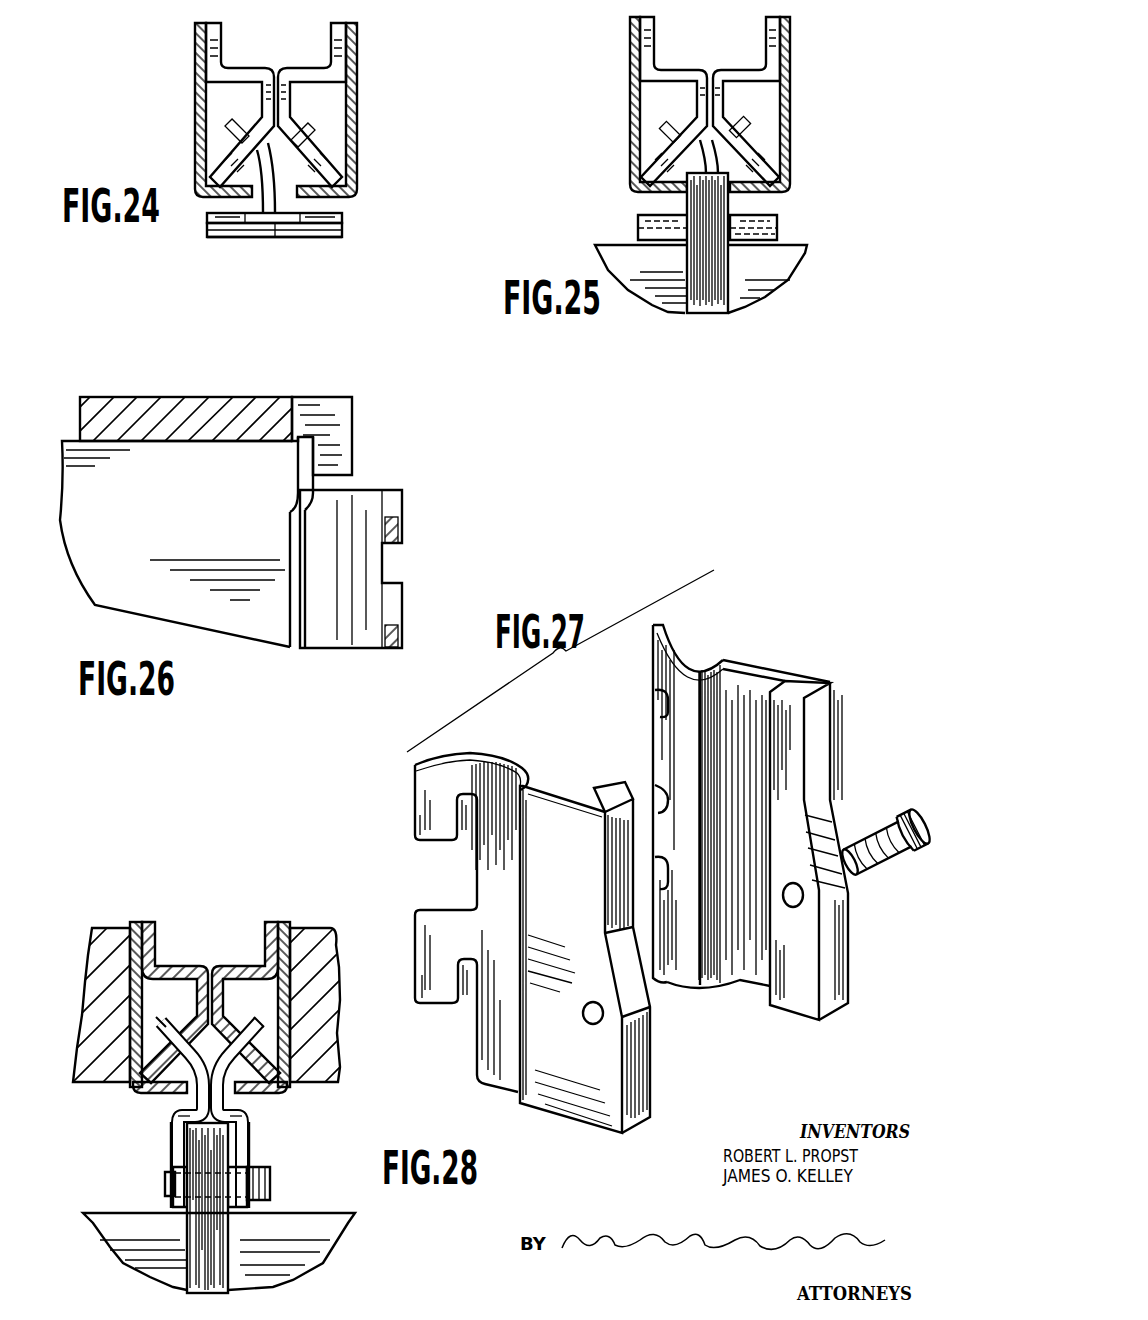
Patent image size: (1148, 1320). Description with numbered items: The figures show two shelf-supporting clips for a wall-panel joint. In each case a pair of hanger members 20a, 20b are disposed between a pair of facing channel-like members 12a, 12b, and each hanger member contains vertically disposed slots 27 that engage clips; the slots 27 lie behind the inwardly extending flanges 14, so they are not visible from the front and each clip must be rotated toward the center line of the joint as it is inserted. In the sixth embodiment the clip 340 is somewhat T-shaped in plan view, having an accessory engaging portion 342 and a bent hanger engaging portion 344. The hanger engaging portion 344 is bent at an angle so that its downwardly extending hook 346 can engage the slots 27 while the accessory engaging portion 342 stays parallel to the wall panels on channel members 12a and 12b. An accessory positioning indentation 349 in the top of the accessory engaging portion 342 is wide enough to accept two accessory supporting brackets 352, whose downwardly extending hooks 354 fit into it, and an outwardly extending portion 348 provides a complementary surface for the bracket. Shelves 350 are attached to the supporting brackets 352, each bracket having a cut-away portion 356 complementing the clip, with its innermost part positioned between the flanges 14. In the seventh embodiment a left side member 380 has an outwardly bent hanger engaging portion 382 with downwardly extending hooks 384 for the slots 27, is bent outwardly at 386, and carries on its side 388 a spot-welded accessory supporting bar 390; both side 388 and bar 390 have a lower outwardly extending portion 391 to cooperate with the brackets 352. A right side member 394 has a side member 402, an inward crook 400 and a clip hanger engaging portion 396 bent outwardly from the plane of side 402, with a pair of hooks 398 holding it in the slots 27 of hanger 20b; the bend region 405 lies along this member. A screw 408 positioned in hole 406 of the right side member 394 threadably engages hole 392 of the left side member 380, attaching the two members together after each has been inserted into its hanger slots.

In FIG. 24, the channel-like member 12a is at (200, 58).
In FIG. 28, the channel-like member 12a is at (131, 988).
In FIG. 24, the channel-like member 12b is at (352, 55).
In FIG. 25, the channel-like member 12b is at (633, 78).
In FIG. 28, the channel-like member 12b is at (292, 1007).
In FIG. 25, the inwardly extending flange 14 is at (652, 197).
In FIG. 28, the inwardly extending flange 14 is at (160, 1095).
In FIG. 24, the hanger member 20a is at (262, 97).
In FIG. 25, the hanger member 20a is at (700, 107).
In FIG. 28, the hanger member 20a is at (163, 955).
In FIG. 24, the hanger member 20b is at (282, 110).
In FIG. 25, the hanger member 20b is at (722, 118).
In FIG. 28, the hanger member 20b is at (257, 958).
In FIG. 24, the slot 27 is at (308, 136).
In FIG. 28, the slot 27 is at (192, 1030).
In FIG. 24, the clip 340 is at (346, 232).
In FIG. 24, the accessory engaging portion 342 is at (336, 218).
In FIG. 26, the accessory engaging portion 342 is at (310, 437).
In FIG. 24, the hanger engaging portion 344 is at (269, 176).
In FIG. 26, the hanger engaging portion 344 is at (375, 554).
In FIG. 26, the downwardly extending hook 346 is at (404, 528).
In FIG. 24, the outwardly extending portion 348 is at (312, 240).
In FIG. 26, the outwardly extending portion 348 is at (306, 505).
In FIG. 24, the accessory positioning indentation 349 is at (263, 240).
In FIG. 25, the shelf 350 is at (640, 270).
In FIG. 26, the shelf 350 is at (205, 400).
In FIG. 28, the shelf 350 is at (133, 1237).
In FIG. 25, the accessory supporting bracket 352 is at (712, 306).
In FIG. 26, the accessory supporting bracket 352 is at (188, 515).
In FIG. 28, the accessory supporting bracket 352 is at (187, 1270).
In FIG. 26, the downwardly extending hook 354 is at (346, 450).
In FIG. 25, the cut away portion 356 is at (762, 232).
In FIG. 26, the cut away portion 356 is at (297, 496).
In FIG. 27, the left side member 380 is at (544, 927).
In FIG. 27, the hanger engaging portion 382 is at (500, 752).
In FIG. 28, the hanger engaging portion 382 is at (133, 1082).
In FIG. 27, the downwardly extending hook 384 is at (430, 823).
In FIG. 27, the outward bend 386 is at (525, 783).
In FIG. 28, the outward bend 386 is at (172, 1121).
In FIG. 27, the side 388 is at (585, 885).
In FIG. 28, the side 388 is at (172, 1162).
In FIG. 27, the accessory supporting bar 390 is at (606, 796).
In FIG. 27, the lower outwardly extending portion 391 is at (637, 977).
In FIG. 27, the hole 392 is at (592, 1022).
In FIG. 27, the right side member 394 is at (780, 821).
In FIG. 27, the clip hanger engaging portion 396 is at (688, 662).
In FIG. 28, the clip hanger engaging portion 396 is at (290, 1082).
In FIG. 27, the hook 398 is at (660, 722).
In FIG. 27, the inward crook 400 is at (722, 657).
In FIG. 28, the inward crook 400 is at (247, 1120).
In FIG. 27, the side member 402 is at (815, 680).
In FIG. 28, the side member 402 is at (248, 1152).
In FIG. 27, the offset bend 405 is at (822, 840).
In FIG. 27, the hole 406 is at (790, 912).
In FIG. 27, the screw 408 is at (901, 864).
In FIG. 28, the screw 408 is at (271, 1187).